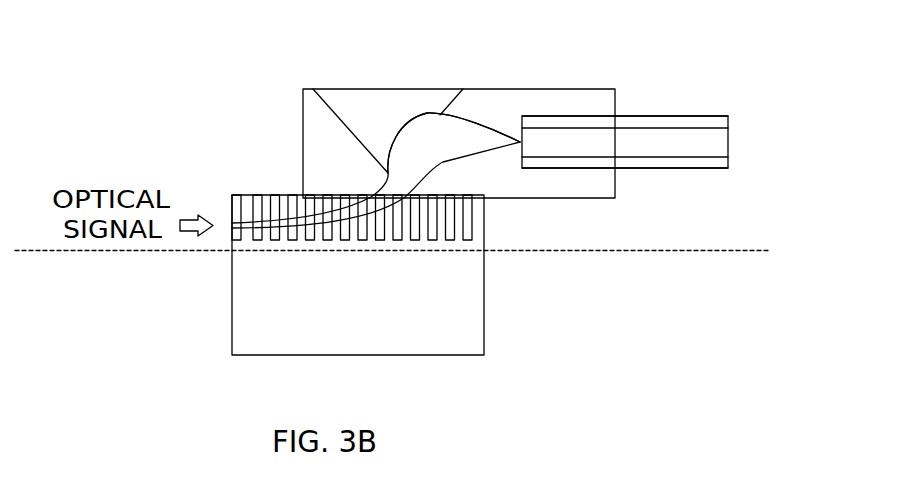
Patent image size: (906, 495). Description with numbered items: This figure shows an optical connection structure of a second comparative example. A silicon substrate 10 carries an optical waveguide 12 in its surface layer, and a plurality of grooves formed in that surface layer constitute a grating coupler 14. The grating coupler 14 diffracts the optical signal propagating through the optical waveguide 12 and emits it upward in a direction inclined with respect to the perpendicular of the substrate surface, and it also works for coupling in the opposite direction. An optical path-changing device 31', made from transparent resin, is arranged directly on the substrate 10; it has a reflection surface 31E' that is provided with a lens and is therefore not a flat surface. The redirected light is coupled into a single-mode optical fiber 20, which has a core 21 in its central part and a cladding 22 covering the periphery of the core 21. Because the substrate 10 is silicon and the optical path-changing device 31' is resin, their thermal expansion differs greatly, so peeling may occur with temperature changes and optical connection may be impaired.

The substrate 10 is at (447, 355).
The optical waveguide 12 is at (484, 218).
The grating coupler 14 is at (453, 246).
The single-mode optical fiber 20 is at (685, 171).
The core 21 is at (722, 143).
The cladding 22 is at (722, 125).
The optical path-changing device 31' is at (414, 143).
The reflection surface 31E' is at (451, 101).